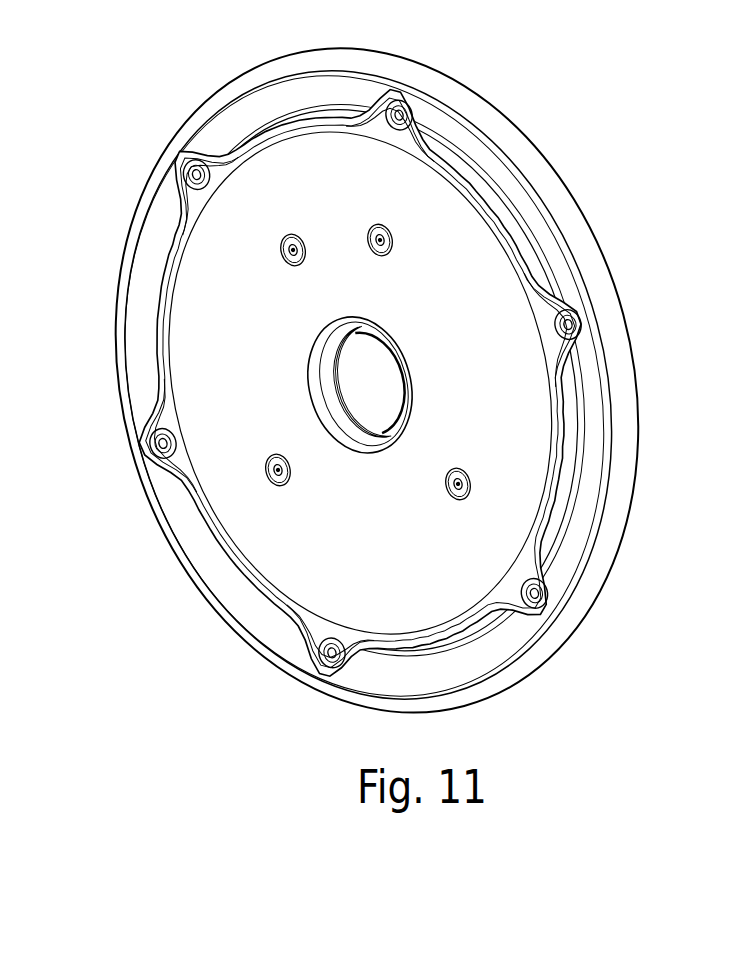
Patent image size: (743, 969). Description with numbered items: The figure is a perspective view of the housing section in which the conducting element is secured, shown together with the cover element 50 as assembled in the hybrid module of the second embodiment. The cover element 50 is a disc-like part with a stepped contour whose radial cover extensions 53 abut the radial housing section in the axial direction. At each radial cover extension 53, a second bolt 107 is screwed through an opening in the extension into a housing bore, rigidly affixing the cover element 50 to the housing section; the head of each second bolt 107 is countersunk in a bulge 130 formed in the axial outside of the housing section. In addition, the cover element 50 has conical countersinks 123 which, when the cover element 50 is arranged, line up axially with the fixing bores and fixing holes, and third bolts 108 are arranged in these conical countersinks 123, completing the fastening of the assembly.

The cover element 50 is at (230, 288).
The radial cover extension 53 is at (538, 573).
The second bolt 107 is at (553, 603).
The third bolt 108 is at (476, 478).
The conical countersink 123 is at (267, 473).
The bulge 130 is at (520, 623).